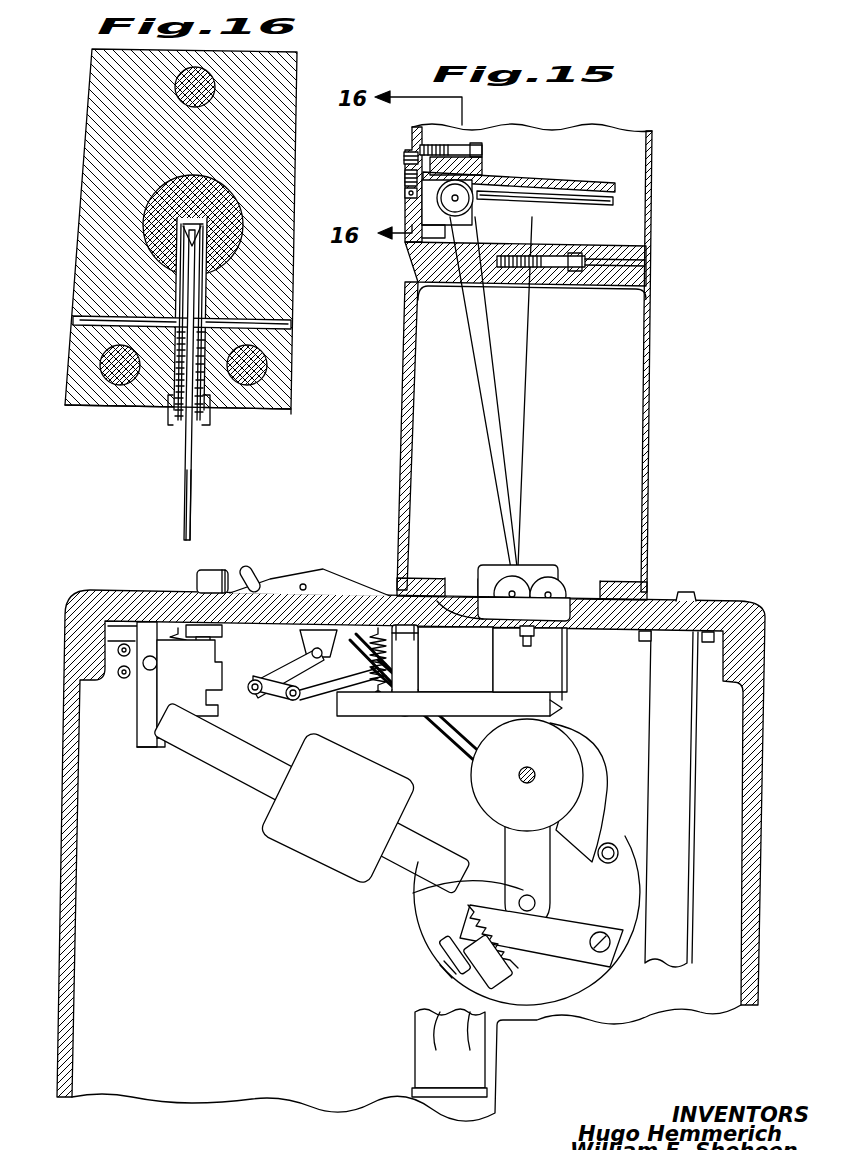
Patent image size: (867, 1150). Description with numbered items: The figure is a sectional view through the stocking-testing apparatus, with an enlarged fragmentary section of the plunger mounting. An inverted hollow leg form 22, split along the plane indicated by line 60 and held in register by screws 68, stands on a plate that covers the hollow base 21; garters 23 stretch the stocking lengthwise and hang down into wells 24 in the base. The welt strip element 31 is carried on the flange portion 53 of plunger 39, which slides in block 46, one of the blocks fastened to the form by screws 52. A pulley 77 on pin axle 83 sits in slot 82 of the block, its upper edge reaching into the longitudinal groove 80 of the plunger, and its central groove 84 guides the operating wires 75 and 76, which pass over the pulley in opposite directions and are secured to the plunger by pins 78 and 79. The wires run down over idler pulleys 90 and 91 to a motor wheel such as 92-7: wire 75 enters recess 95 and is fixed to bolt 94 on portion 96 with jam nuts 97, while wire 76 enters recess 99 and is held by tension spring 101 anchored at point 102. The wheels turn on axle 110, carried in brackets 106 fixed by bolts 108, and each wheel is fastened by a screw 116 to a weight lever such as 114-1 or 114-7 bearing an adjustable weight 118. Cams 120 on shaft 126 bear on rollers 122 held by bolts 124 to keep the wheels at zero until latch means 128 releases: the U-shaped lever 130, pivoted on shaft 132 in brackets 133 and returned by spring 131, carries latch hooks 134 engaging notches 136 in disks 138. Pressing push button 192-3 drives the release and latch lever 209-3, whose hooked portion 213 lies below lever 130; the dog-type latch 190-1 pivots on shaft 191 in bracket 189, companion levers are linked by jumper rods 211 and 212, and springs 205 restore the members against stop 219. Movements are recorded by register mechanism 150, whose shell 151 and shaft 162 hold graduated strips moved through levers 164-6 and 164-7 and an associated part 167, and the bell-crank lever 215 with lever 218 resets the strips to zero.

In FIG. 15, the hollow base 21 is at (762, 870).
In FIG. 15, the inverted hollow leg form 22 is at (648, 400).
In FIG. 15, the garters 23 is at (692, 592).
In FIG. 15, the wells 24 is at (690, 810).
In FIG. 15, the strip element 31 is at (408, 152).
In FIG. 16, the plunger 39 is at (232, 255).
In FIG. 15, the plunger 39 is at (618, 181).
In FIG. 16, the block 46 is at (289, 412).
In FIG. 15, the block 46 is at (480, 165).
In FIG. 16, the screws 52 is at (213, 80).
In FIG. 15, the screws 52 is at (474, 148).
In FIG. 15, the flange portion 53 is at (405, 194).
In FIG. 15, the split plane line 60 is at (535, 363).
In FIG. 15, the screws 68 is at (560, 274).
In FIG. 16, the operating wire 75 is at (192, 466).
In FIG. 15, the operating wire 75 is at (566, 202).
In FIG. 16, the operating wire 76 is at (186, 484).
In FIG. 15, the operating wire 76 is at (498, 365).
In FIG. 16, the pulley 77 is at (181, 412).
In FIG. 15, the pulley 77 is at (462, 210).
In FIG. 15, the pin 78 is at (618, 200).
In FIG. 15, the pin 79 is at (405, 180).
In FIG. 16, the groove 80 is at (215, 210).
In FIG. 15, the groove 80 is at (598, 203).
In FIG. 16, the slot 82 is at (177, 362).
In FIG. 16, the pin axle 83 is at (292, 323).
In FIG. 15, the pin axle 83 is at (470, 176).
In FIG. 16, the central groove 84 is at (201, 420).
In FIG. 15, the idler pulley 90 is at (508, 587).
In FIG. 15, the idler pulley 91 is at (553, 591).
In FIG. 15, the motor wheel 92-7 is at (577, 995).
In FIG. 15, the bolt 94 is at (445, 962).
In FIG. 15, the recess 95 is at (448, 948).
In FIG. 15, the portion of wheel 96 is at (480, 975).
In FIG. 15, the jam nuts 97 is at (449, 1053).
In FIG. 15, the recess 99 is at (520, 942).
In FIG. 15, the tension spring 101 is at (540, 912).
In FIG. 15, the point 102 is at (462, 910).
In FIG. 15, the brackets 106 is at (565, 662).
In FIG. 15, the bolts 108 is at (527, 648).
In FIG. 15, the axle 110 is at (455, 895).
In FIG. 15, the weight lever 114-1 is at (172, 740).
In FIG. 15, the weight lever 114-7 is at (240, 782).
In FIG. 15, the screw 116 is at (607, 950).
In FIG. 15, the weight 118 is at (287, 843).
In FIG. 15, the cams 120 is at (598, 800).
In FIG. 15, the rollers 122 is at (620, 854).
In FIG. 15, the bolts 124 is at (615, 858).
In FIG. 15, the shaft 126 is at (537, 773).
In FIG. 15, the latch means 128 is at (556, 696).
In FIG. 15, the U-shaped lever 130 is at (447, 692).
In FIG. 15, the spring 131 is at (384, 694).
In FIG. 15, the shaft 132 is at (405, 710).
In FIG. 15, the brackets 133 is at (412, 660).
In FIG. 15, the latch hooks 134 is at (556, 722).
In FIG. 15, the notch 136 is at (520, 718).
In FIG. 15, the disk 138 is at (565, 748).
In FIG. 15, the register mechanism 150 is at (390, 595).
In FIG. 15, the shell 151 is at (268, 590).
In FIG. 15, the shaft 162 is at (304, 584).
In FIG. 15, the lever 164-6 is at (340, 660).
In FIG. 15, the lever 164-7 is at (330, 660).
In FIG. 15, the lever 167 is at (305, 640).
In FIG. 15, the bracket 189 is at (112, 628).
In FIG. 15, the latch 190-1 is at (150, 745).
In FIG. 15, the shaft 191 is at (146, 671).
In FIG. 15, the push button 192-3 is at (200, 572).
In FIG. 15, the springs 205 is at (176, 636).
In FIG. 15, the combined release and latch lever 209-3 is at (185, 685).
In FIG. 15, the jumper rod 211 is at (117, 650).
In FIG. 15, the jumper rod 212 is at (117, 673).
In FIG. 15, the lower hooked portion 213 is at (205, 752).
In FIG. 15, the bell-crank lever 215 is at (248, 572).
In FIG. 15, the lever 218 is at (268, 694).
In FIG. 15, the stop 219 is at (195, 645).